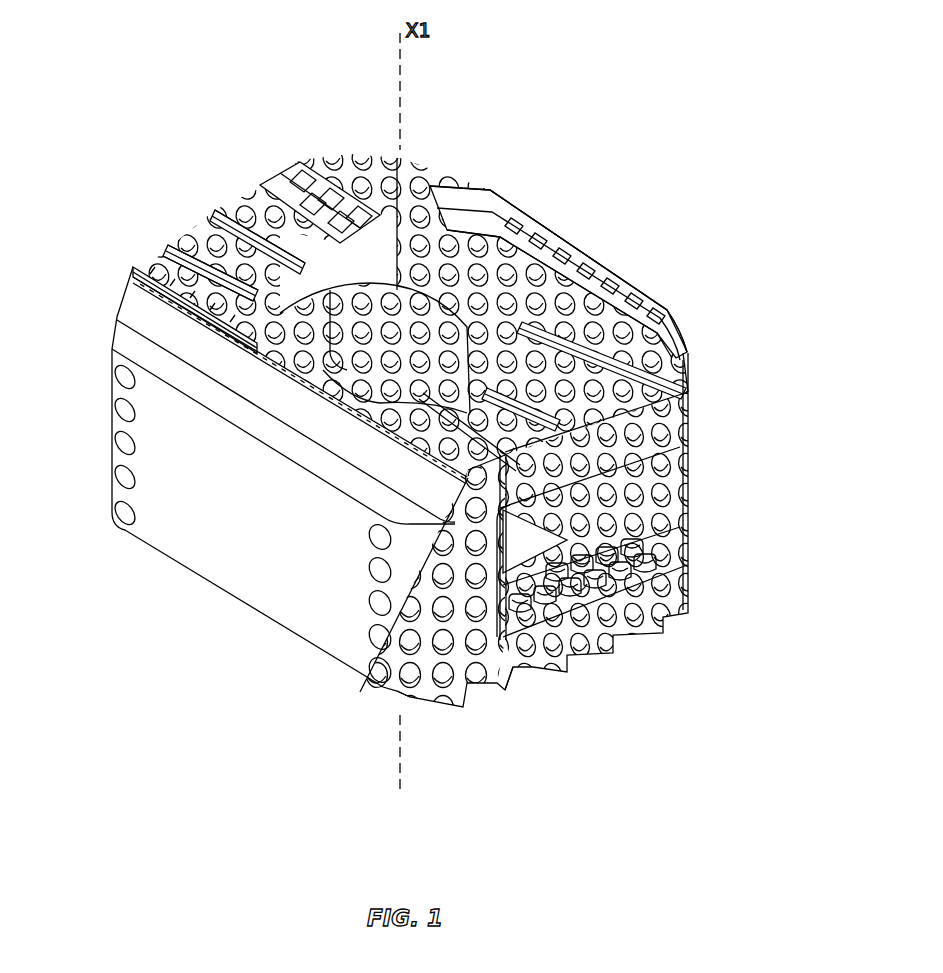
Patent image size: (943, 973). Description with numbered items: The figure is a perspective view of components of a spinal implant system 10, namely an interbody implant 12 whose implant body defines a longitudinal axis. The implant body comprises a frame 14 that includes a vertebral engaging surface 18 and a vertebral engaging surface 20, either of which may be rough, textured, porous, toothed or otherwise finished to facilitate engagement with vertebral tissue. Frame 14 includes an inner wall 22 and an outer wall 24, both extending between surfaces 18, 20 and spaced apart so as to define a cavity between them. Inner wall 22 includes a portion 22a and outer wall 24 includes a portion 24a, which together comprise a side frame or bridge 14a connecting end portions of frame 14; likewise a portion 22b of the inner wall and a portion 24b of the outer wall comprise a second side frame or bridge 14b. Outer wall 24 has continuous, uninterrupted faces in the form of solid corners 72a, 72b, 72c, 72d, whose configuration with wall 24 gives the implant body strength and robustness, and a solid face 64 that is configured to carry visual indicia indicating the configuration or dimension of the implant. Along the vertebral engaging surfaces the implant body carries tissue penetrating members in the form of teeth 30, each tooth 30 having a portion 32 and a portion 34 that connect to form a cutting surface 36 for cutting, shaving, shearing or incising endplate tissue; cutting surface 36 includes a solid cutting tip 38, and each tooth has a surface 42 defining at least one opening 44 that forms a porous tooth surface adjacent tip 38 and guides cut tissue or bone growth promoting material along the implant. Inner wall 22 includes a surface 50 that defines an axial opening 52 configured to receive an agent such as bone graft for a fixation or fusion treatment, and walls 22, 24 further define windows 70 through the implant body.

The spinal implant system 10 is at (761, 53).
The interbody implant 12 is at (120, 80).
The frame 14 is at (762, 282).
The side frame 14a is at (167, 242).
The side frame 14b is at (508, 605).
The vertebral engaging surface 18 is at (627, 300).
The vertebral engaging surface 20 is at (468, 683).
The inner wall 22 is at (470, 300).
The portion of inner wall 22a is at (360, 243).
The portion of inner wall 22b is at (567, 330).
The outer wall 24 is at (320, 605).
The portion of outer wall 24a is at (312, 160).
The portion of outer wall 24b is at (683, 437).
The tooth 30 is at (213, 233).
The portion of tooth 32 is at (187, 240).
The portion of tooth 34 is at (280, 318).
The cutting surface 36 is at (640, 408).
The solid cutting tip 38 is at (655, 333).
The tooth surface 42 is at (667, 540).
The opening 44 is at (380, 660).
The surface of inner wall 50 is at (428, 215).
The axial opening 52 is at (160, 263).
The solid face 64 is at (195, 540).
The window 70 is at (567, 620).
The solid corner 72a is at (410, 697).
The solid corner 72b is at (690, 377).
The solid corner 72c is at (443, 187).
The solid corner 72d is at (112, 345).